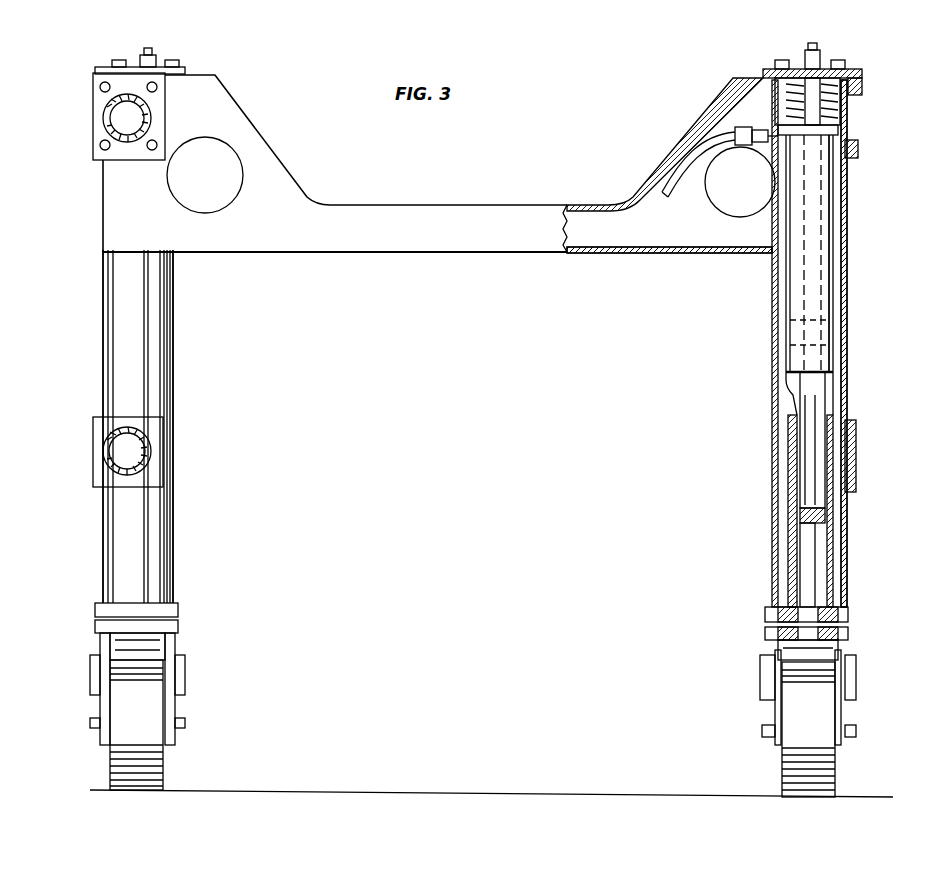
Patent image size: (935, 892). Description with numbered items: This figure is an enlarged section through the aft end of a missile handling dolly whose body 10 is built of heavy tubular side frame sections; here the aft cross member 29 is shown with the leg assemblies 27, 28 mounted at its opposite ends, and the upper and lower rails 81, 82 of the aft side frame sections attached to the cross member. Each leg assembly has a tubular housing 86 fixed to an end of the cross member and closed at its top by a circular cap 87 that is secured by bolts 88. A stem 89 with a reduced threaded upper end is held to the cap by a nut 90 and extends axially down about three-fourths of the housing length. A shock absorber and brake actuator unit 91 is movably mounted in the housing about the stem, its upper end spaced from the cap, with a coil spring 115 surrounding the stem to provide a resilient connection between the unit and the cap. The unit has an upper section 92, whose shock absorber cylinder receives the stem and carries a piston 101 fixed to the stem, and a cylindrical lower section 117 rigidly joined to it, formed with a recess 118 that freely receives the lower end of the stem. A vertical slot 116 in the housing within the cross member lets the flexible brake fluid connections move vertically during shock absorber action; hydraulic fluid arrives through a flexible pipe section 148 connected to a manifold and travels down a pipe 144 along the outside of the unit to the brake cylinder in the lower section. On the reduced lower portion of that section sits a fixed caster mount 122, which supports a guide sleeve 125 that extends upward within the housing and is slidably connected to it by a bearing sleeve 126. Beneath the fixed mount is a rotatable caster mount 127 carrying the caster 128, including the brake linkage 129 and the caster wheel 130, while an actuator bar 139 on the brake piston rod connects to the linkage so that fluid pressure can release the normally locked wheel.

The body 10 is at (389, 194).
The leg assembly 27 is at (859, 189).
The leg assembly 28 is at (93, 333).
The aft cross member 29 is at (512, 203).
The upper rail 81 is at (103, 118).
The lower rail 82 is at (103, 452).
The tubular housing 86 is at (175, 280).
The circular cap 87 is at (95, 70).
The bolts 88 is at (115, 58).
The stem 89 is at (842, 126).
The nut 90 is at (152, 53).
The shock absorber and brake actuator unit 91 is at (847, 243).
The upper section 92 is at (834, 266).
The piston 101 is at (815, 332).
The coil spring 115 is at (835, 110).
The vertical slot 116 is at (773, 238).
The cylindrical lower section 117 is at (826, 380).
The recess 118 is at (812, 500).
The fixed caster mount 122 is at (180, 608).
The guide sleeve 125 is at (832, 460).
The bearing sleeve 126 is at (845, 565).
The rotatable caster mount 127 is at (180, 627).
The caster 128 is at (175, 772).
The brake linkage 129 is at (186, 672).
The caster wheel 130 is at (128, 790).
The actuator bar 139 is at (150, 648).
The pipe 144 is at (787, 382).
The flexible pipe section 148 is at (690, 170).